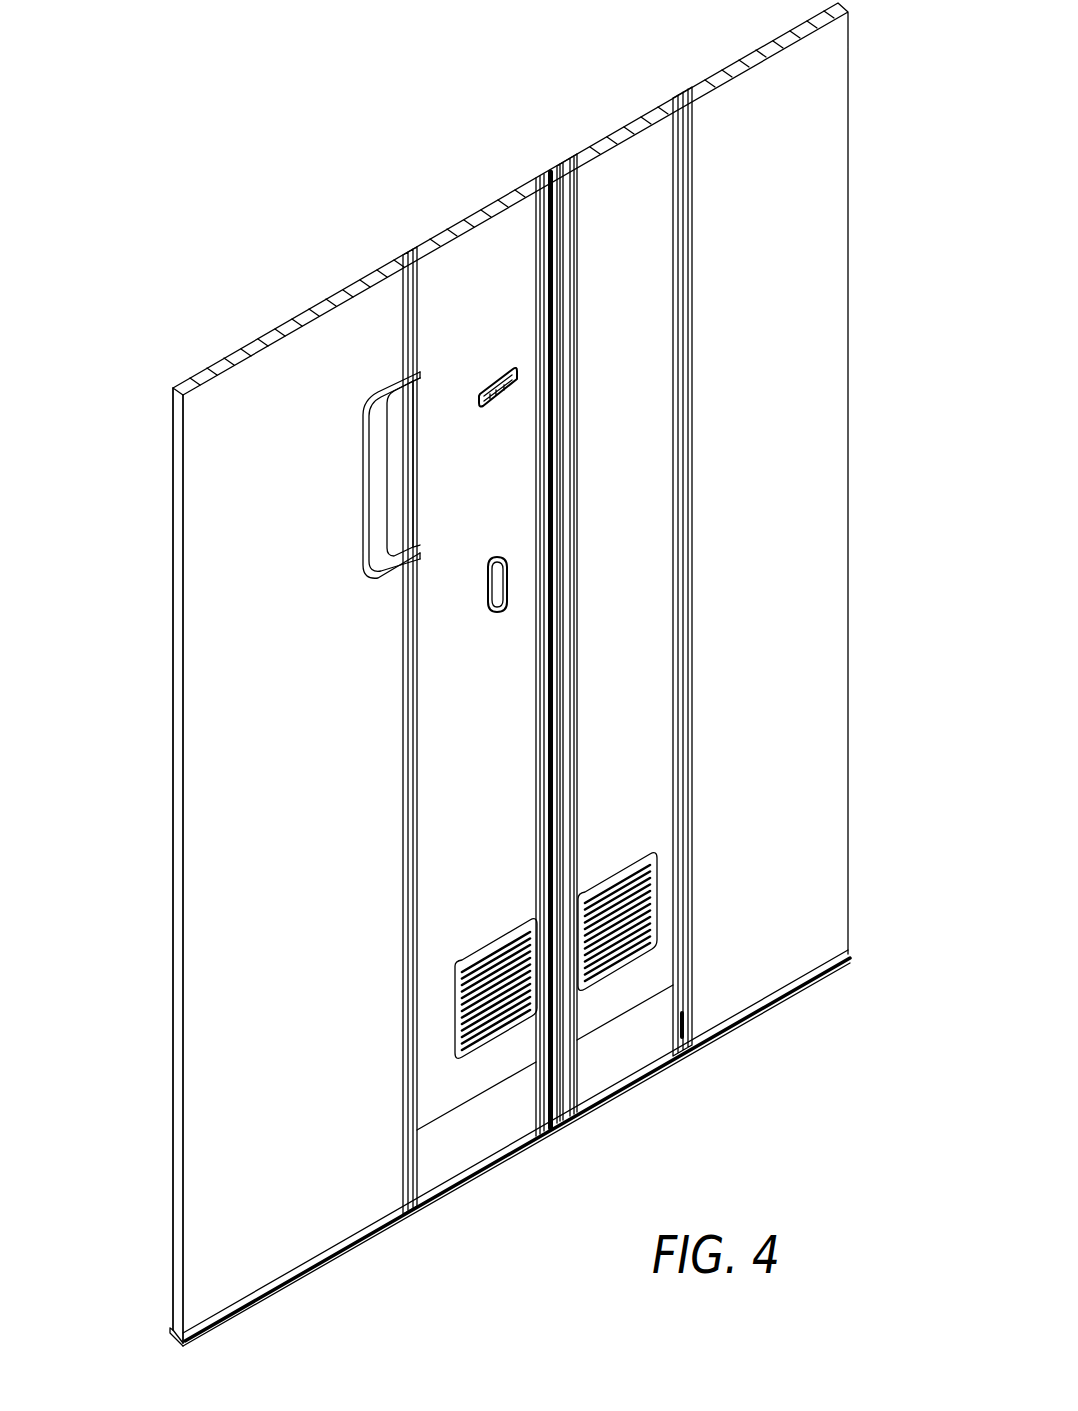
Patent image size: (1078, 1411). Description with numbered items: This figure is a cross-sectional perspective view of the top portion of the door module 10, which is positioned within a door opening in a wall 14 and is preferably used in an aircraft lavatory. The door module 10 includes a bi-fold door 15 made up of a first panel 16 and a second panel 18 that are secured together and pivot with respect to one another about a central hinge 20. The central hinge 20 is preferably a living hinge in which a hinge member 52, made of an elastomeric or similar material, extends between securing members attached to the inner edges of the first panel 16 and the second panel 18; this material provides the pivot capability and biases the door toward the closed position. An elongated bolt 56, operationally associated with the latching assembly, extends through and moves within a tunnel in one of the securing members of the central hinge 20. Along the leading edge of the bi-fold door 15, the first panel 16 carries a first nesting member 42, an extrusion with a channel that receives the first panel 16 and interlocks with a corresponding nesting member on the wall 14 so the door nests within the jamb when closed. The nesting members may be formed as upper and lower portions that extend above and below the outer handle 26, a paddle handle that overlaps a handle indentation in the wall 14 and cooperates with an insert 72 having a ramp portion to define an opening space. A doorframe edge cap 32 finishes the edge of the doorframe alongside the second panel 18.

The door module 10 is at (156, 296).
The wall 14 is at (203, 751).
The bi-fold door 15 is at (345, 859).
The first panel 16 is at (490, 738).
The second panel 18 is at (639, 653).
The central hinge 20 is at (535, 136).
The outer handle 26 is at (397, 523).
The doorframe edge cap 32 is at (674, 100).
The first nesting member 42 is at (404, 257).
The hinge member 52 is at (558, 174).
The elongated bolt 56 is at (540, 180).
The insert 72 is at (378, 491).